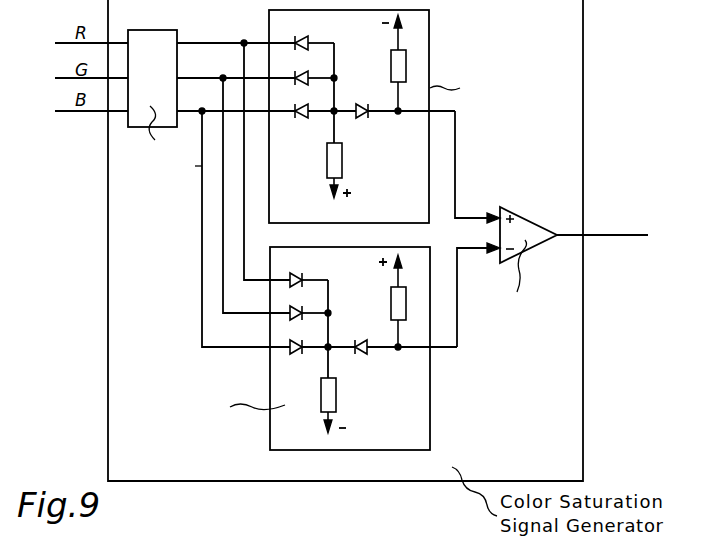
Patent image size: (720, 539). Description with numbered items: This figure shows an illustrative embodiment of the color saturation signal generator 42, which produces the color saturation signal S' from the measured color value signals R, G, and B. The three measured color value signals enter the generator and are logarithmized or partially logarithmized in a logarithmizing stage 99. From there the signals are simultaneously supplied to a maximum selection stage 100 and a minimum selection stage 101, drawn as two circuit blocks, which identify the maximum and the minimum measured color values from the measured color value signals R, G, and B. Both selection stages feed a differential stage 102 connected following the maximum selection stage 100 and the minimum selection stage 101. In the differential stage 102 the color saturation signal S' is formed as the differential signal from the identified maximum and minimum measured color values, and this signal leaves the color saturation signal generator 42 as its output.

The color saturation signal generator 42 is at (118, 206).
The logarithmizing stage 99 is at (157, 40).
The maximum selection stage 100 is at (429, 46).
The minimum selection stage 101 is at (428, 405).
The differential stage 102 is at (532, 230).